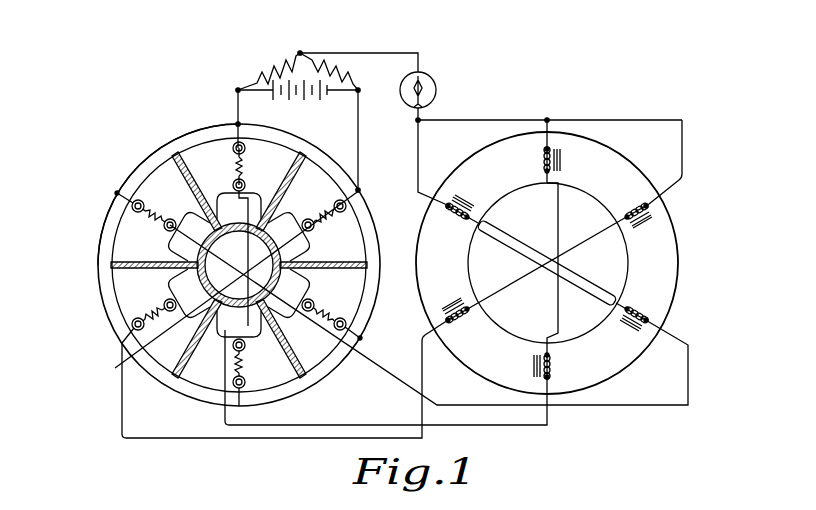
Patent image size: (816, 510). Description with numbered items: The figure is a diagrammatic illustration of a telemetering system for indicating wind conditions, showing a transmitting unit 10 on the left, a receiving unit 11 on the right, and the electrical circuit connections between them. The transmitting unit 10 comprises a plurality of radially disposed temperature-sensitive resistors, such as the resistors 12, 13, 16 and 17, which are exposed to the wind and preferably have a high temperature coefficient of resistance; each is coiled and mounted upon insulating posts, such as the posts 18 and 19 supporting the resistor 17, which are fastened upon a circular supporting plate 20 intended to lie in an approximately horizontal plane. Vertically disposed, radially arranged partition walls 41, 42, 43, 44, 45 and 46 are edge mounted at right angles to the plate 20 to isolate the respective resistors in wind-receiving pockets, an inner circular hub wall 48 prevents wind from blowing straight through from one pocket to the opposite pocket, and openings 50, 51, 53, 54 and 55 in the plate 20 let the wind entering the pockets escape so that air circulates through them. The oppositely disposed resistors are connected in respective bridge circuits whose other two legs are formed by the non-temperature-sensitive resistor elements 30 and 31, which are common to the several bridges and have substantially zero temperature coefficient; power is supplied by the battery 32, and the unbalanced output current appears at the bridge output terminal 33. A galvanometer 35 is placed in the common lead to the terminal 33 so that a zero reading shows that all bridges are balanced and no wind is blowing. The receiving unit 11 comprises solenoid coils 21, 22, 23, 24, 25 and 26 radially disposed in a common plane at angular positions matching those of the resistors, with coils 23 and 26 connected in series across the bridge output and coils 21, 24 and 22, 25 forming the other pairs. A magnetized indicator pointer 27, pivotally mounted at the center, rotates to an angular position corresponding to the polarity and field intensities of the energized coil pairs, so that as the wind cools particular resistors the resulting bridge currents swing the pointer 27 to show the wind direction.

The transmitting unit 10 is at (127, 156).
The receiving unit 11 is at (688, 224).
The temperature-sensitive resistor 12 is at (112, 208).
The temperature-sensitive resistor 13 is at (148, 316).
The temperature-sensitive resistor 16 is at (326, 208).
The temperature-sensitive resistor 17 is at (244, 165).
The insulating post 18 is at (233, 143).
The insulating post 19 is at (250, 186).
The supporting plate 20 is at (115, 368).
The solenoid coil 21 is at (459, 215).
The solenoid coil 22 is at (460, 320).
The solenoid coil 23 is at (553, 370).
The solenoid coil 24 is at (656, 322).
The solenoid coil 25 is at (637, 208).
The solenoid coil 26 is at (543, 159).
The magnetized indicator pointer 27 is at (540, 228).
The non-temperature-sensitive resistor element 30 is at (260, 78).
The non-temperature-sensitive resistor element 31 is at (343, 78).
The battery 32 is at (318, 98).
The bridge output terminal 33 is at (300, 53).
The galvanometer 35 is at (433, 80).
The partition wall 41 is at (177, 367).
The partition wall 42 is at (256, 344).
The partition wall 43 is at (318, 306).
The partition wall 44 is at (295, 174).
The partition wall 45 is at (168, 168).
The partition wall 46 is at (163, 262).
The inner circular hub wall 48 is at (239, 265).
The opening 50 is at (190, 313).
The opening 51 is at (228, 338).
The opening 53 is at (305, 252).
The opening 54 is at (232, 149).
The opening 55 is at (178, 220).